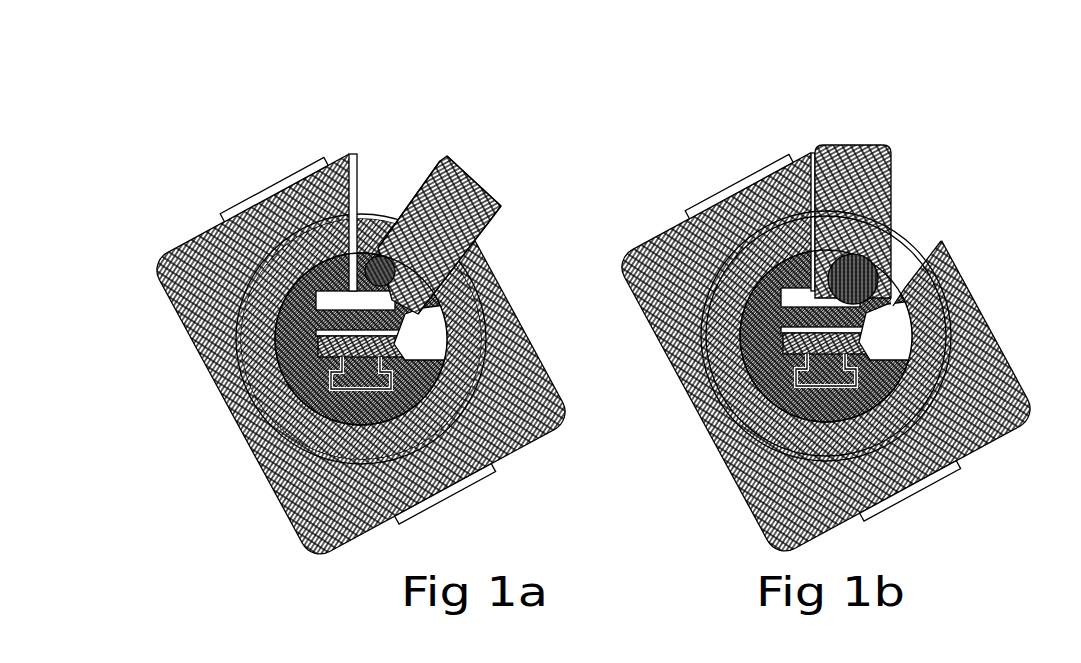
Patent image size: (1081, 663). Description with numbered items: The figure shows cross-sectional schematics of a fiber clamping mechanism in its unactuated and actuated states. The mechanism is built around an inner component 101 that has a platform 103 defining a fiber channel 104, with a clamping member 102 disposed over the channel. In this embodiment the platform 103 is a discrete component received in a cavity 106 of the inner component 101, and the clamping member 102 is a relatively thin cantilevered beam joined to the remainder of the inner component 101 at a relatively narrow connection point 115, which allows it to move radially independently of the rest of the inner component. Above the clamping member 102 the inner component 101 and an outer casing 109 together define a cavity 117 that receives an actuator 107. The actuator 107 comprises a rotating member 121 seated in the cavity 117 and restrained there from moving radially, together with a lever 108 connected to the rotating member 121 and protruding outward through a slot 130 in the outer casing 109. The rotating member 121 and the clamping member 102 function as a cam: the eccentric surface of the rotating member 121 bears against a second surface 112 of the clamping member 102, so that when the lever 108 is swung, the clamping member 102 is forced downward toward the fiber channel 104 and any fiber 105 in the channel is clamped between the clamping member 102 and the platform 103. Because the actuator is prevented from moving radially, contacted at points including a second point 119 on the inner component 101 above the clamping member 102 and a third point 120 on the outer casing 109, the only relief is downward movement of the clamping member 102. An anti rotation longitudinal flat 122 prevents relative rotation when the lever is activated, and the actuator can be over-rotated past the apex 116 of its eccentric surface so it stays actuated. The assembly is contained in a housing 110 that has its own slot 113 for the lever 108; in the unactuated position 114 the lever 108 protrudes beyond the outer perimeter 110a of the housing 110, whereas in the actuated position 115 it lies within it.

In FIG. 1a, the inner component 101 is at (300, 372).
In FIG. 1a, the clamping member 102 is at (305, 220).
In FIG. 1a, the platform 103 is at (330, 392).
In FIG. 1a, the fiber channel 104 is at (358, 460).
In FIG. 1a, the fiber 105 is at (517, 432).
In FIG. 1a, the cavity 106 is at (350, 420).
In FIG. 1a, the actuator 107 is at (292, 161).
In FIG. 1a, the lever 108 is at (412, 262).
In FIG. 1a, the outer casing 109 is at (340, 412).
In FIG. 1a, the housing 110 is at (355, 465).
In FIG. 1a, the outer perimeter 110a is at (200, 220).
In FIG. 1a, the second surface 112 is at (477, 216).
In FIG. 1a, the slot 113 is at (393, 153).
In FIG. 1a, the unactuated position 114 is at (460, 180).
In FIG. 1a, the actuated position 115 is at (290, 280).
In FIG. 1b, the actuated position 115 is at (830, 137).
In FIG. 1b, the apex 116 is at (870, 248).
In FIG. 1a, the cavity 117 is at (390, 255).
In FIG. 1b, the second point 119 is at (757, 203).
In FIG. 1a, the third point 120 is at (487, 192).
In FIG. 1a, the rotating member 121 is at (367, 238).
In FIG. 1a, the anti rotation longitudinal flat 122 is at (273, 248).
In FIG. 1b, the slot 130 is at (893, 253).